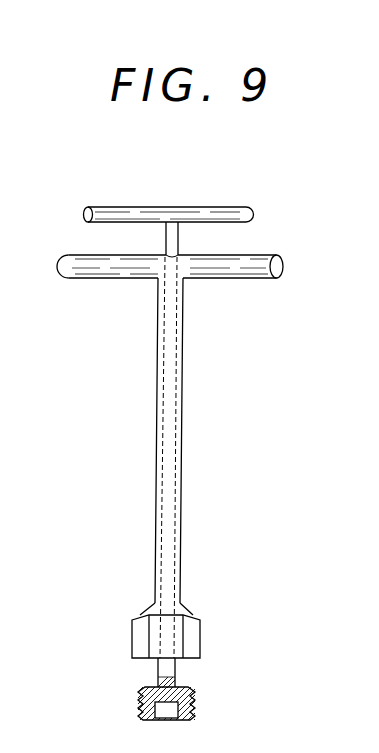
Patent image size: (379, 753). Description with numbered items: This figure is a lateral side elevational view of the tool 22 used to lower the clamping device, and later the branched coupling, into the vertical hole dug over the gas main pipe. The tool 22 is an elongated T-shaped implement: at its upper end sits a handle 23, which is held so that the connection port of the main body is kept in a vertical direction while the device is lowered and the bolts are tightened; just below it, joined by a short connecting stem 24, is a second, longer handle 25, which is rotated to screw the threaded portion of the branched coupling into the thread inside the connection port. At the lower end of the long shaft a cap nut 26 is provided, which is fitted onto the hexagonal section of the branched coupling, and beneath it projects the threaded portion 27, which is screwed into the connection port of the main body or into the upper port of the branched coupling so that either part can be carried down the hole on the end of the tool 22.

The tool 22 is at (182, 388).
The handle 23 is at (140, 207).
The connecting stem 24 is at (171, 238).
The handle 25 is at (245, 266).
The cap nut 26 is at (190, 630).
The threaded portion 27 is at (195, 695).